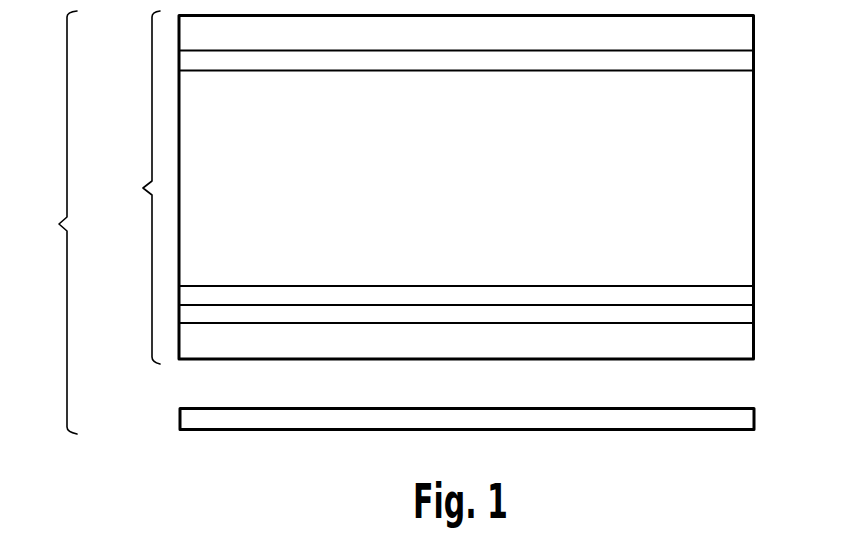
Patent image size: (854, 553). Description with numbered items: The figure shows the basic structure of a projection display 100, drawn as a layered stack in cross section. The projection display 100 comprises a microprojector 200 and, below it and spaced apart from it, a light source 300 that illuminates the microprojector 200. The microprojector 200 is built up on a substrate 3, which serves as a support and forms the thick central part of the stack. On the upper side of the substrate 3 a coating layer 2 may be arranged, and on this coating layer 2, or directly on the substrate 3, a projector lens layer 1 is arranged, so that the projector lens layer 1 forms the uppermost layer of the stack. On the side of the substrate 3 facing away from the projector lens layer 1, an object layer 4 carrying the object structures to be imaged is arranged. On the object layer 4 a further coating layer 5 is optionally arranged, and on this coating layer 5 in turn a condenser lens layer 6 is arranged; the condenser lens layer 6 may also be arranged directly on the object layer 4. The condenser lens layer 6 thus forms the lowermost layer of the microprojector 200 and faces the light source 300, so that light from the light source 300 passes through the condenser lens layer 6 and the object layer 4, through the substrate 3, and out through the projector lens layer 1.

The projection display 100 is at (43, 222).
The microprojector 200 is at (424, 187).
The light source 300 is at (200, 415).
The projector lens layer 1 is at (743, 32).
The coating layer 2 is at (743, 62).
The substrate 3 is at (743, 144).
The object layer 4 is at (743, 295).
The coating layer 5 is at (743, 316).
The condenser lens layer 6 is at (743, 348).